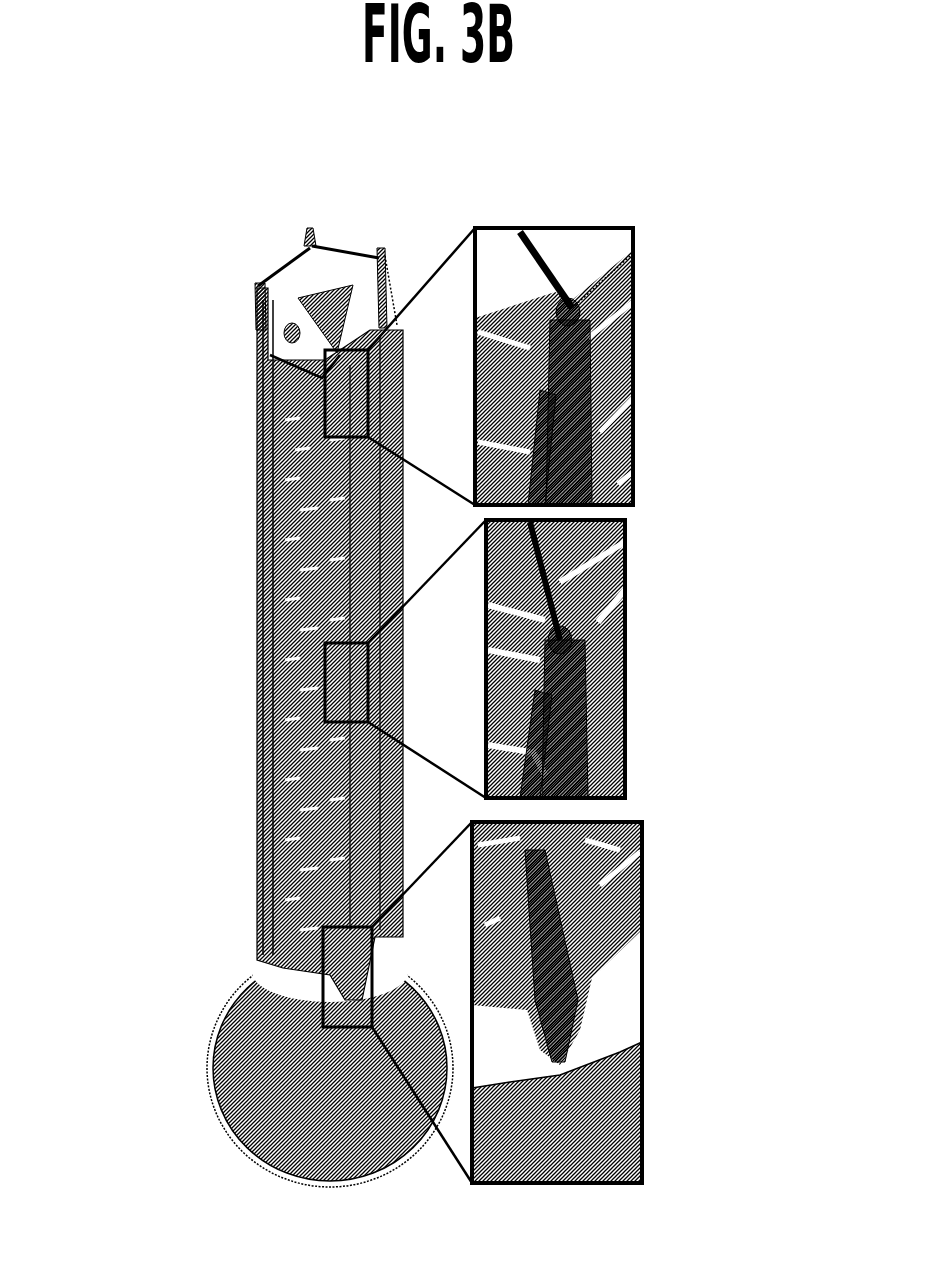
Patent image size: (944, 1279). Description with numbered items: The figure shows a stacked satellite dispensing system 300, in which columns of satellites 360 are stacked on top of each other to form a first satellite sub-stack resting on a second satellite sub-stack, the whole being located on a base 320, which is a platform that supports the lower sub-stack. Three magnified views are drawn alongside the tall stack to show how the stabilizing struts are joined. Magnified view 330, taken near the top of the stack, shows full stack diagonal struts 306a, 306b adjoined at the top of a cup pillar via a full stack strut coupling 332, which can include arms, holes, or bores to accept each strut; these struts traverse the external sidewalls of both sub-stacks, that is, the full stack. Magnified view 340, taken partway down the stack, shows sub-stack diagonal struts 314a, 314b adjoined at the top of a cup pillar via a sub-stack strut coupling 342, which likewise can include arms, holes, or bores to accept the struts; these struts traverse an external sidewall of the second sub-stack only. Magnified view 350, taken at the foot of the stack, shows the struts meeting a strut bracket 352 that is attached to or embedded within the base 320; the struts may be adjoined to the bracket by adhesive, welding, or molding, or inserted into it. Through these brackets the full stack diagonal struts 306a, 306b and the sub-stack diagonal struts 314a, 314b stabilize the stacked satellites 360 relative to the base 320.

The stacked satellite dispensing system 300 is at (106, 252).
The satellites 360 is at (298, 283).
The magnified view 330 is at (633, 252).
The full stack strut coupling 332 is at (573, 327).
The full stack diagonal strut 306b is at (590, 398).
The full stack diagonal strut 306a is at (533, 476).
The magnified view 340 is at (625, 553).
The sub-stack strut coupling 342 is at (565, 643).
The sub-stack diagonal strut 314b is at (585, 698).
The sub-stack diagonal strut 314a is at (517, 777).
The magnified view 350 is at (642, 847).
The strut bracket 352 is at (560, 1058).
The base 320 is at (610, 1135).